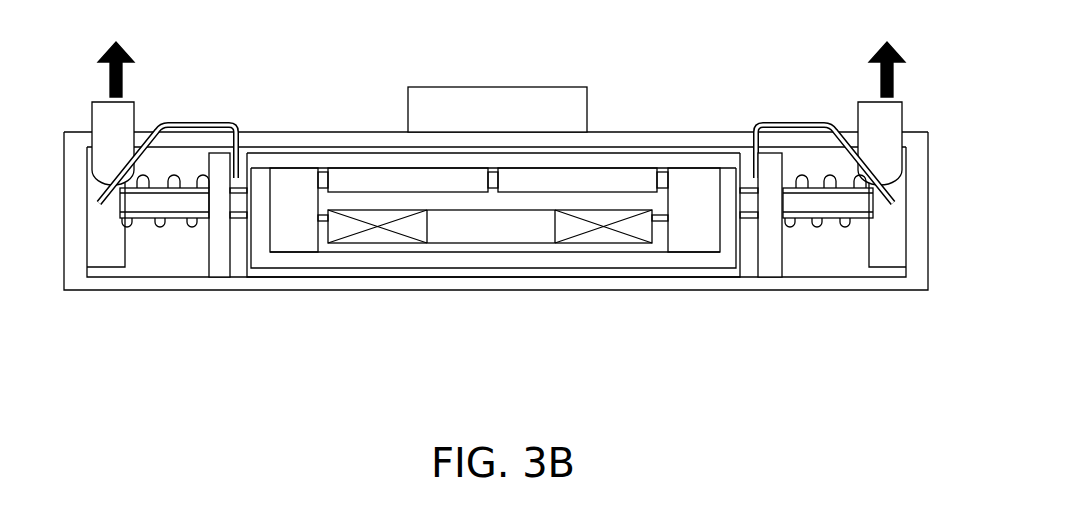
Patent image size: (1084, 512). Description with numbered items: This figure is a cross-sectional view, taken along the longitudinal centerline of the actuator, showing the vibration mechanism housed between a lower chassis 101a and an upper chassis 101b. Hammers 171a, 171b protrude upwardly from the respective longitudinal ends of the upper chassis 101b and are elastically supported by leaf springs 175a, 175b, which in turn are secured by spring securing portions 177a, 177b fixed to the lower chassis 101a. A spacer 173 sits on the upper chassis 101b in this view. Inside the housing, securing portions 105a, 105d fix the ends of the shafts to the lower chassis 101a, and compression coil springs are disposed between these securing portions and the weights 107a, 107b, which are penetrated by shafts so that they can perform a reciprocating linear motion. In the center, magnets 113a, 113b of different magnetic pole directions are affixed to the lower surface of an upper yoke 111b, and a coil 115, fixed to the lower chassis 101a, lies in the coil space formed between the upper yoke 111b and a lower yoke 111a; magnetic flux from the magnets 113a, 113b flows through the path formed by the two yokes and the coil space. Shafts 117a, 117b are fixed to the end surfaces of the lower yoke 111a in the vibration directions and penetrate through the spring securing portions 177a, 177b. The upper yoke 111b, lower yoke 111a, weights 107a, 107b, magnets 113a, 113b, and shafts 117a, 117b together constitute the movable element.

The lower chassis 101a is at (918, 248).
The upper chassis 101b is at (622, 167).
The securing portion 105a is at (107, 228).
The securing portion 105d is at (888, 247).
The weight 107a is at (285, 182).
The weight 107b is at (698, 185).
The lower yoke 111a is at (375, 262).
The upper yoke 111b is at (353, 162).
The magnet 113a is at (438, 177).
The magnet 113b is at (538, 178).
The coil 115 is at (537, 245).
The shaft 117a is at (177, 200).
The shaft 117b is at (834, 198).
The hammer 171a is at (133, 102).
The hammer 171b is at (896, 100).
The spacer 173 is at (503, 100).
The leaf spring 175a is at (221, 123).
The leaf spring 175b is at (807, 121).
The spring securing portion 177a is at (218, 265).
The spring securing portion 177b is at (773, 268).